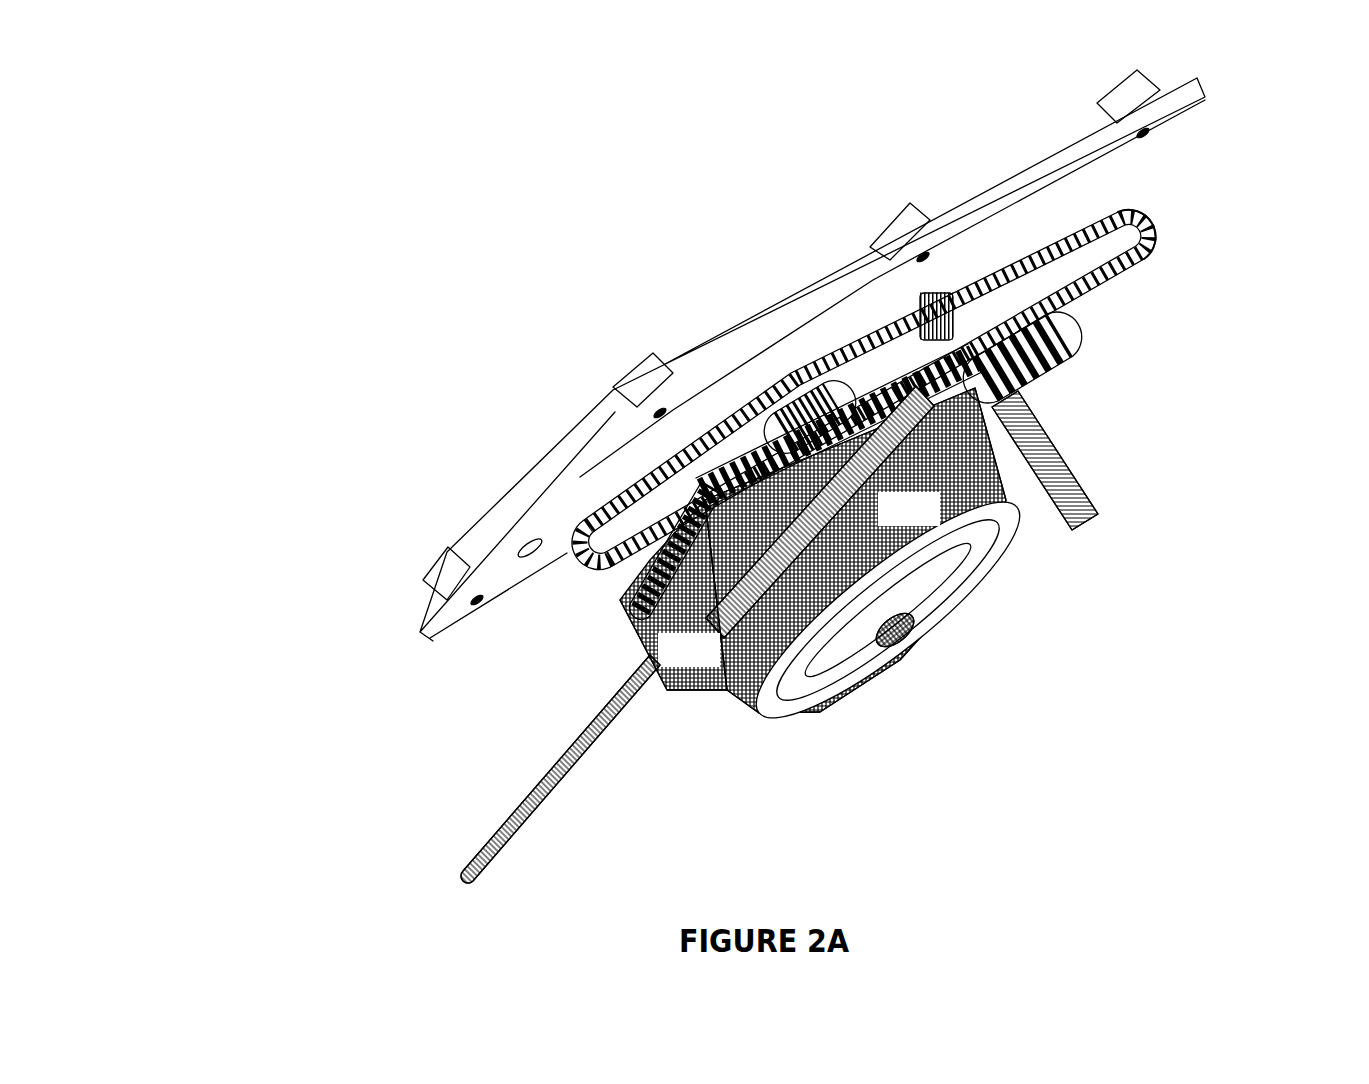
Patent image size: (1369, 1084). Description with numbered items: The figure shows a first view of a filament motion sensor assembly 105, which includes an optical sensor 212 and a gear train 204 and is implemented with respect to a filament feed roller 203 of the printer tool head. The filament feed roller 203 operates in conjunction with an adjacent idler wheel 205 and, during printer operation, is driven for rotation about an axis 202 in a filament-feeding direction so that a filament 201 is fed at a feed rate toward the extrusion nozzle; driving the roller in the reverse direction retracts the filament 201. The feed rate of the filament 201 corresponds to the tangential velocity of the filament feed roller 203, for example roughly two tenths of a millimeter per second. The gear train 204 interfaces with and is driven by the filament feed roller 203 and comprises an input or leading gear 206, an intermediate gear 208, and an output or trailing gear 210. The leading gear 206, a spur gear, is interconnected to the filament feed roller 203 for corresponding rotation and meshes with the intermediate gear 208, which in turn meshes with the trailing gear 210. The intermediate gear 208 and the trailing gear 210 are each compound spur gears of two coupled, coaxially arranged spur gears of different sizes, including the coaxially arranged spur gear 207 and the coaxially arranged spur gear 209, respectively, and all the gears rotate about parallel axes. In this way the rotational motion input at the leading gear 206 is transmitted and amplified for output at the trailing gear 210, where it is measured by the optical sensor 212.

The filament motion sensor assembly 105 is at (168, 124).
The filament 201 is at (536, 826).
The axis 202 is at (908, 638).
The filament feed roller 203 is at (935, 524).
The gear train 204 is at (617, 650).
The idler wheel 205 is at (715, 665).
The leading gear 206 is at (1025, 405).
The coaxially arranged spur gear 207 is at (1068, 352).
The intermediate gear 208 is at (1138, 210).
The coaxially arranged spur gear 209 is at (828, 390).
The trailing gear 210 is at (832, 392).
The optical sensor 212 is at (553, 411).